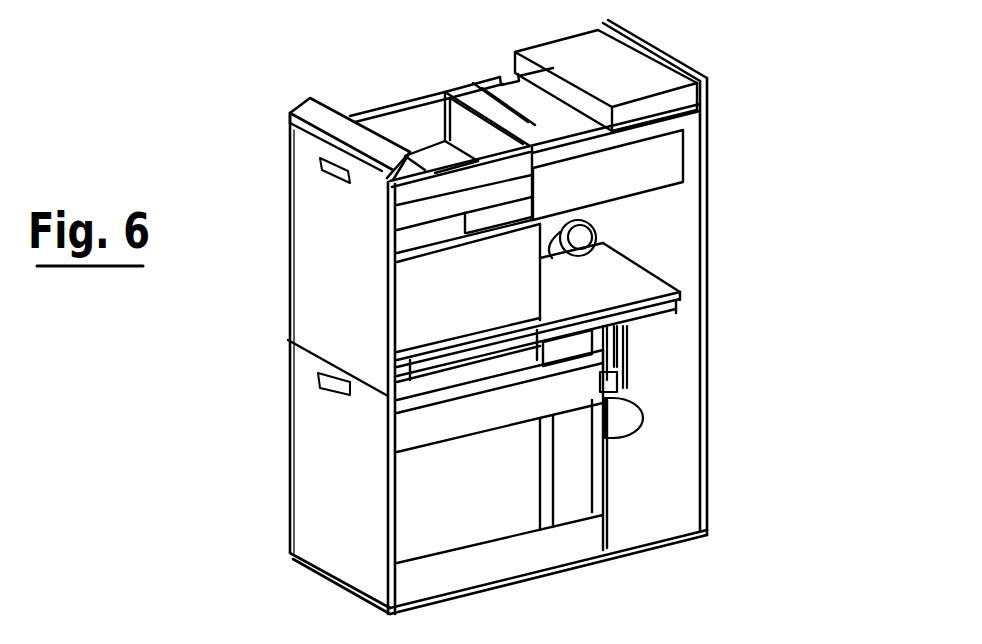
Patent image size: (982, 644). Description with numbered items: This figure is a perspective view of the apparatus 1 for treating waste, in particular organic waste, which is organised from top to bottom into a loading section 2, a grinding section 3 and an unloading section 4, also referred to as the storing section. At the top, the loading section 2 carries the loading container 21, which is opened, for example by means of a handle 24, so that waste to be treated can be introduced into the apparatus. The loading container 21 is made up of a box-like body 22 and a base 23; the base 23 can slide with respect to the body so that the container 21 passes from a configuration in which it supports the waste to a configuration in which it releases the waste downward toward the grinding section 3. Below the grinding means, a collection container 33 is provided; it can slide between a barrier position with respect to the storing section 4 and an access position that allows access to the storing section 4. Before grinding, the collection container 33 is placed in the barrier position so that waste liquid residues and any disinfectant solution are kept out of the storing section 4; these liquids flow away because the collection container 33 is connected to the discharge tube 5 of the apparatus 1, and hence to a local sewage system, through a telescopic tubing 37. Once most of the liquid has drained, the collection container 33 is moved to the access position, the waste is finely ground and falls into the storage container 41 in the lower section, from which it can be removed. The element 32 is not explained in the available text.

The apparatus 1 is at (795, 491).
The loading section 2 is at (266, 143).
The grinding section 3 is at (285, 312).
The unloading section 4 is at (407, 489).
The discharge tube 5 is at (662, 441).
The loading container 21 is at (364, 77).
The box-like body 22 is at (413, 112).
The base 23 is at (680, 160).
The handle 24 is at (296, 186).
The knob 32 is at (586, 240).
The collection container 33 is at (673, 313).
The telescopic tubing 37 is at (630, 353).
The storage container 41 is at (473, 528).